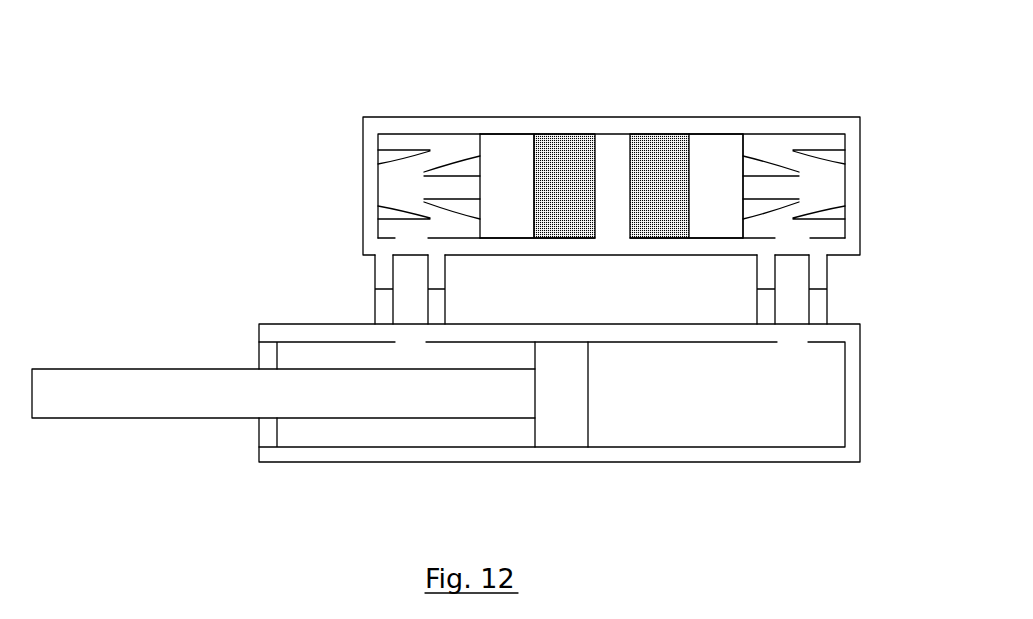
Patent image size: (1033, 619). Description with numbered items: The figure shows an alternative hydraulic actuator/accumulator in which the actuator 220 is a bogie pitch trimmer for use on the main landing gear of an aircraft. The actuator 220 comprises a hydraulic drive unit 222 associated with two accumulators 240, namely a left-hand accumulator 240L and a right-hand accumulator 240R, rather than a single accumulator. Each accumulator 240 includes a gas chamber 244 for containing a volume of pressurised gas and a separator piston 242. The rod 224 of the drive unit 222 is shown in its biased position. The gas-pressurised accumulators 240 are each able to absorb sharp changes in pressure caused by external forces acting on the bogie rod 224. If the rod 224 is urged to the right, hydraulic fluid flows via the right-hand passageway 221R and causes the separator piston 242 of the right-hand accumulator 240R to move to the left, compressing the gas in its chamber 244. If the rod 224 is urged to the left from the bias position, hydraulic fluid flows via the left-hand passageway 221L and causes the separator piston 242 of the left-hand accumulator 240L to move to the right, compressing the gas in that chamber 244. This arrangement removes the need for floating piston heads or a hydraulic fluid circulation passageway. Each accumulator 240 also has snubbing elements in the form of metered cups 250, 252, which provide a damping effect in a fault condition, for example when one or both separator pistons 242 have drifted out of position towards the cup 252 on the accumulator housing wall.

The actuator 220 is at (300, 158).
The left-hand passageway 221L is at (407, 295).
The right-hand passageway 221R is at (795, 284).
The hydraulic drive unit 222 is at (307, 485).
The rod 224 is at (468, 405).
The accumulator 240 is at (613, 132).
The left-hand accumulator 240L is at (496, 105).
The right-hand accumulator 240R is at (742, 109).
The separator piston 242 is at (510, 228).
The gas chamber 244 is at (575, 238).
The metered cup 250 is at (467, 165).
The metered cup 252 is at (392, 212).